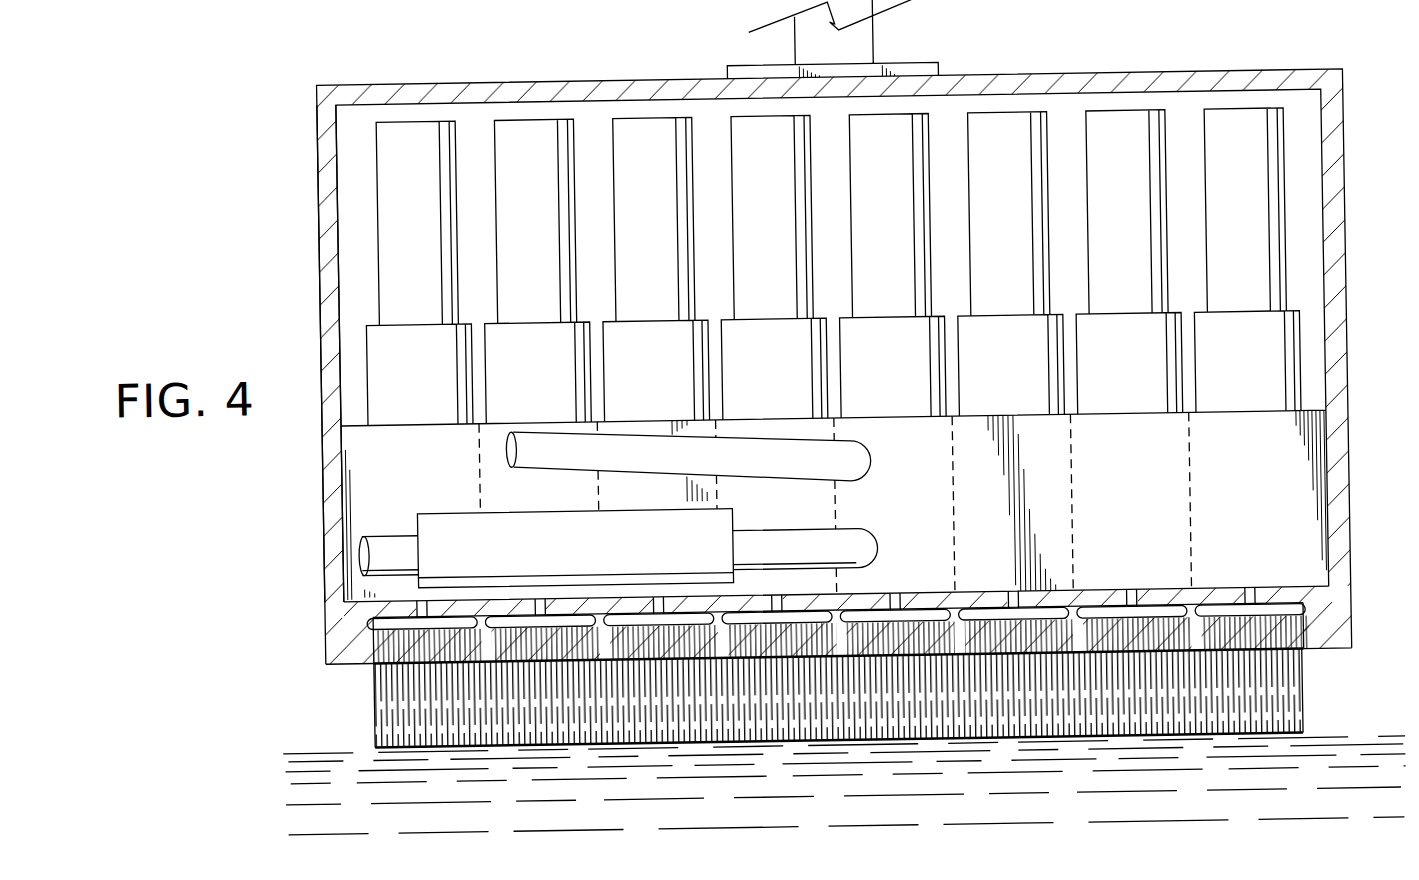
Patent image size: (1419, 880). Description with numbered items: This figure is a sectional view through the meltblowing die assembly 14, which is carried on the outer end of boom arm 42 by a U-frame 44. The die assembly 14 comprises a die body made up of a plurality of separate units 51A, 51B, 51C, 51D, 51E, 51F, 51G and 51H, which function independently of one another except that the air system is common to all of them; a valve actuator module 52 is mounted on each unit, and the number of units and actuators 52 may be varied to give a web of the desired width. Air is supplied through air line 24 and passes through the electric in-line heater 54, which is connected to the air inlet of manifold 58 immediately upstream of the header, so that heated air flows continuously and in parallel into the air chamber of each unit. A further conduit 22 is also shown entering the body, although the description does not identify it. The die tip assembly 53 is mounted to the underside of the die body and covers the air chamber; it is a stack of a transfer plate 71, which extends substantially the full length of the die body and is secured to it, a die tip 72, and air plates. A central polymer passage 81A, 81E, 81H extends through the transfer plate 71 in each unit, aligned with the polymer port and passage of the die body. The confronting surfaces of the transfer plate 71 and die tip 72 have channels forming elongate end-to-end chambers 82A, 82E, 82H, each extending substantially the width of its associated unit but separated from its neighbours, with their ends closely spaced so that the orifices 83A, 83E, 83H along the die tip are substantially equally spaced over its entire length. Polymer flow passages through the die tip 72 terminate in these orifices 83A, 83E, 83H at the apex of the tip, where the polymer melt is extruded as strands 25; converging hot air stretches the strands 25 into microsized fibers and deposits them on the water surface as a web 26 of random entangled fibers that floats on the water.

The die assembly 14 is at (317, 108).
The U-frame 44 is at (332, 298).
The arm 42 is at (866, 40).
The valve actuator module 52 is at (1228, 137).
The die body unit 51A is at (448, 445).
The die body unit 51B is at (570, 432).
The die body unit 51C is at (654, 445).
The die body unit 51D is at (787, 443).
The die body unit 51E is at (909, 471).
The die body unit 51F is at (1027, 463).
The die body unit 51G is at (1140, 465).
The die body unit 51H is at (1260, 473).
The manifold 58 is at (1284, 473).
The supply tube 22 is at (538, 453).
The air line 24 is at (385, 551).
The air heater 54 is at (461, 529).
The transfer plate 71 is at (1300, 615).
The die tip assembly 53 is at (359, 625).
The die tip 72 is at (1312, 648).
The central polymer passage 81A is at (460, 595).
The central polymer passage 81E is at (879, 605).
The central polymer passage 81H is at (1265, 607).
The chamber 82A is at (410, 624).
The chamber 82E is at (900, 607).
The chamber 82H is at (1230, 622).
The orifices 83A is at (374, 669).
The orifices 83E is at (864, 663).
The orifices 83H is at (1291, 668).
The strands 25 is at (366, 680).
The web 26 is at (405, 743).